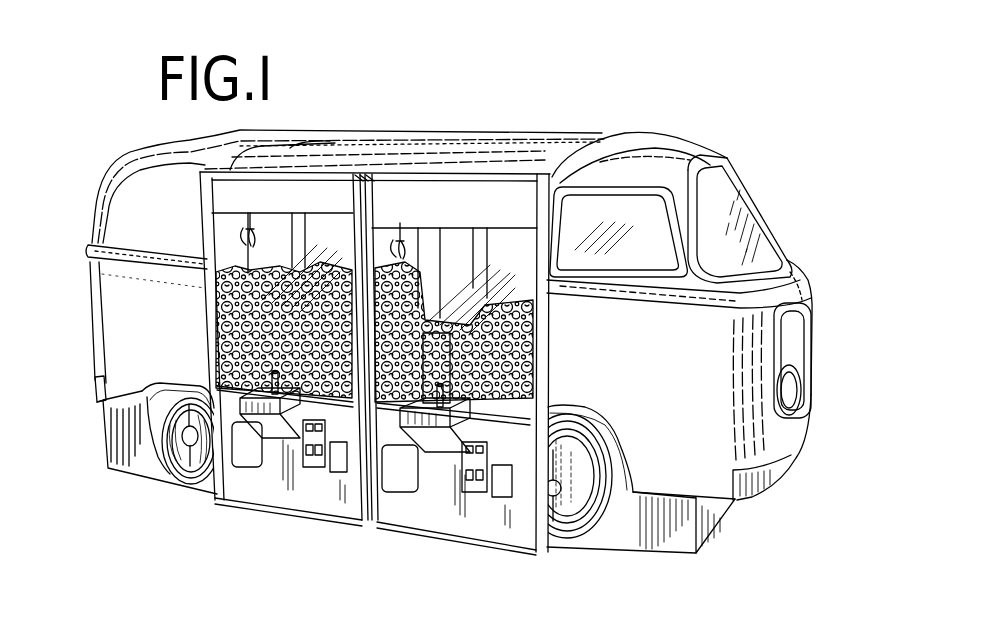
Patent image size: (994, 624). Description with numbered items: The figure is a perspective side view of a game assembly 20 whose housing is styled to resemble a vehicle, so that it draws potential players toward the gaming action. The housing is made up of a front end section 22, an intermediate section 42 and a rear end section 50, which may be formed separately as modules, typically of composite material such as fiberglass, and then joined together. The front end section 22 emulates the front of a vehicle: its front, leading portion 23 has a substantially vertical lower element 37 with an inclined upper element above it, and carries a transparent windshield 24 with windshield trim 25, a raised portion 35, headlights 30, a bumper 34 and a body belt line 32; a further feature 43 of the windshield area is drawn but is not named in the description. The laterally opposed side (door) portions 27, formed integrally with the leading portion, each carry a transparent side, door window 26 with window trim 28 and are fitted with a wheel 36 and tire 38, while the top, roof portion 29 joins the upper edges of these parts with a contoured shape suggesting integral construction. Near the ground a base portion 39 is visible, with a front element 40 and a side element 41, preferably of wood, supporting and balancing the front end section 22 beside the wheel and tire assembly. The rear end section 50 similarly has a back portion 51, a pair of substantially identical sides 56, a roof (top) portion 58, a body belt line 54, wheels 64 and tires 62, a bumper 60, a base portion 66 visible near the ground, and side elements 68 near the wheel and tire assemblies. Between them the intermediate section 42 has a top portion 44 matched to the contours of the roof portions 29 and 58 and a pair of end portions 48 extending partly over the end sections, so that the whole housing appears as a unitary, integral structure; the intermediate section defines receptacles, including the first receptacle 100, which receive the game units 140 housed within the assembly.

The game assembly 20 is at (494, 84).
The front end section 22 is at (802, 187).
The front, leading portion 23 is at (800, 419).
The transparent windshield 24 is at (736, 182).
The windshield trim 25 is at (727, 160).
The transparent side, door window 26 is at (658, 268).
The side (door) portions 27 is at (657, 390).
The window trim 28 is at (601, 190).
The top, roof portion 29 is at (661, 147).
The headlights 30 is at (793, 390).
The body belt line 32 is at (791, 263).
The bumper 34 is at (774, 462).
The raised portion 35 is at (805, 292).
The wheel 36 is at (556, 515).
The lower element 37 is at (762, 435).
The tire 38 is at (579, 529).
The base portion 39 is at (741, 532).
The front element 40 is at (734, 503).
The side element 41 is at (627, 539).
The intermediate section 42 is at (418, 146).
The windshield glass 43 is at (756, 200).
The top portion 44 is at (496, 147).
The end portions 48 is at (298, 143).
The rear end section 50 is at (102, 140).
The back portion 51 is at (90, 210).
The body belt line 54 is at (87, 253).
The sides 56 is at (160, 327).
The roof (top) portion 58 is at (267, 145).
The bumper 60 is at (97, 390).
The tires 62 is at (202, 482).
The wheels 64 is at (188, 450).
The base portion 66 is at (105, 475).
The side elements 68 is at (152, 464).
The first receptacle 100 is at (383, 540).
The game units 140 is at (487, 538).